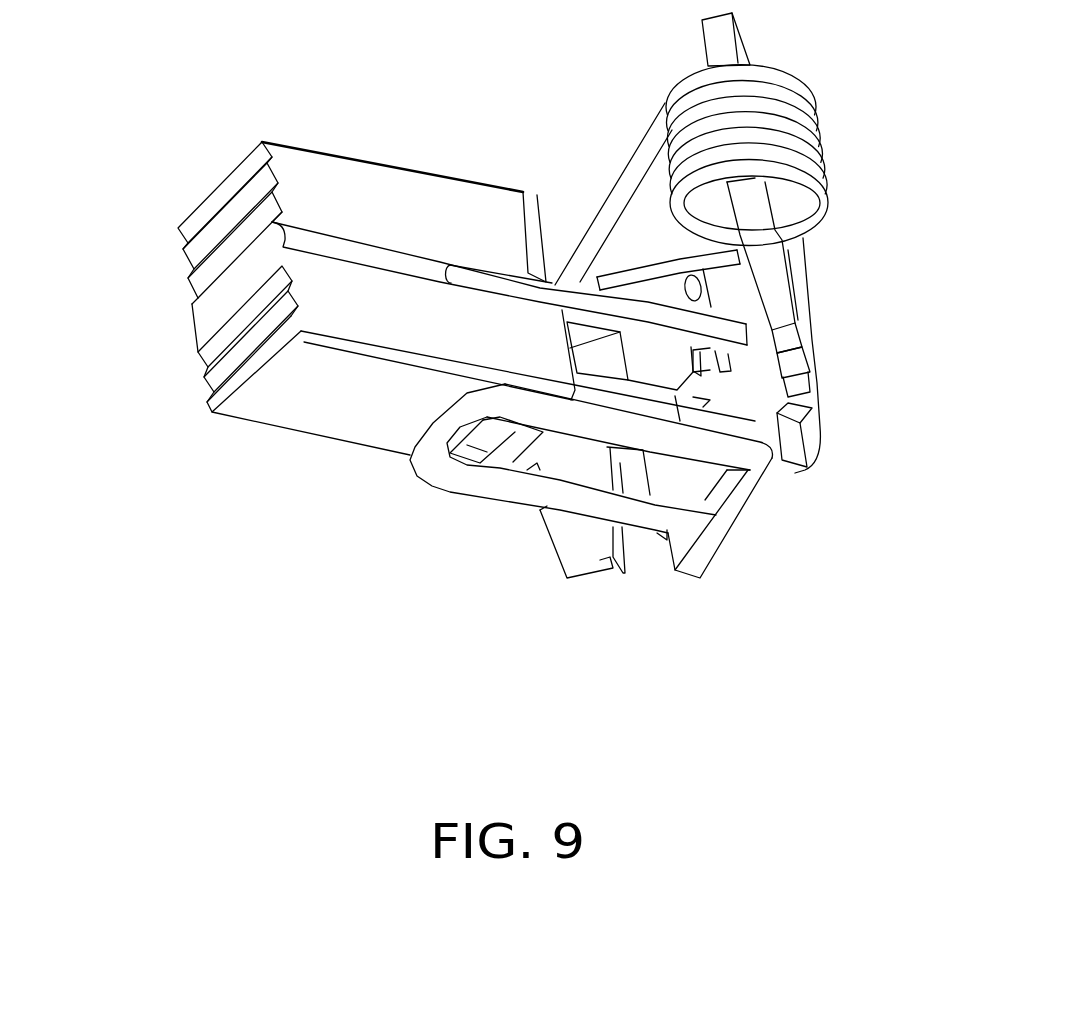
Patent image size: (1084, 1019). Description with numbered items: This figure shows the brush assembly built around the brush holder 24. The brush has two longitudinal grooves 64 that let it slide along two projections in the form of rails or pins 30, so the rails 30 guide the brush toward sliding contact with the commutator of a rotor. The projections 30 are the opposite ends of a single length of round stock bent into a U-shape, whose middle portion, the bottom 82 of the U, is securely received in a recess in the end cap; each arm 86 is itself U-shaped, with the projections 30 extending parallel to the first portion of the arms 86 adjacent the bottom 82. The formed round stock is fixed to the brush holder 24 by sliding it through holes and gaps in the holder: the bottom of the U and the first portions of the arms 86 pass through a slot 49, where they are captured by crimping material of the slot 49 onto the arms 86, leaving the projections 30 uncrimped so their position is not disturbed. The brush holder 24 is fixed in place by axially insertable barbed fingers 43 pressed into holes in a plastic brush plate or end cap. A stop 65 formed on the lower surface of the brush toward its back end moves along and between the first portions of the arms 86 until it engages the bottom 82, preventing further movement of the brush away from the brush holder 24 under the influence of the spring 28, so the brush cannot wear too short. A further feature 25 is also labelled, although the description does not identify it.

The brush holder 24 is at (748, 405).
The hook 25 is at (797, 443).
The spring 28 is at (813, 140).
The projections 30 is at (552, 290).
The axially insertable barbed fingers 43 is at (802, 358).
The slot 49 is at (722, 495).
The longitudinal grooves 64 is at (205, 358).
The stop 65 is at (478, 453).
The middle portion 82 is at (430, 430).
The arms 86 is at (587, 502).